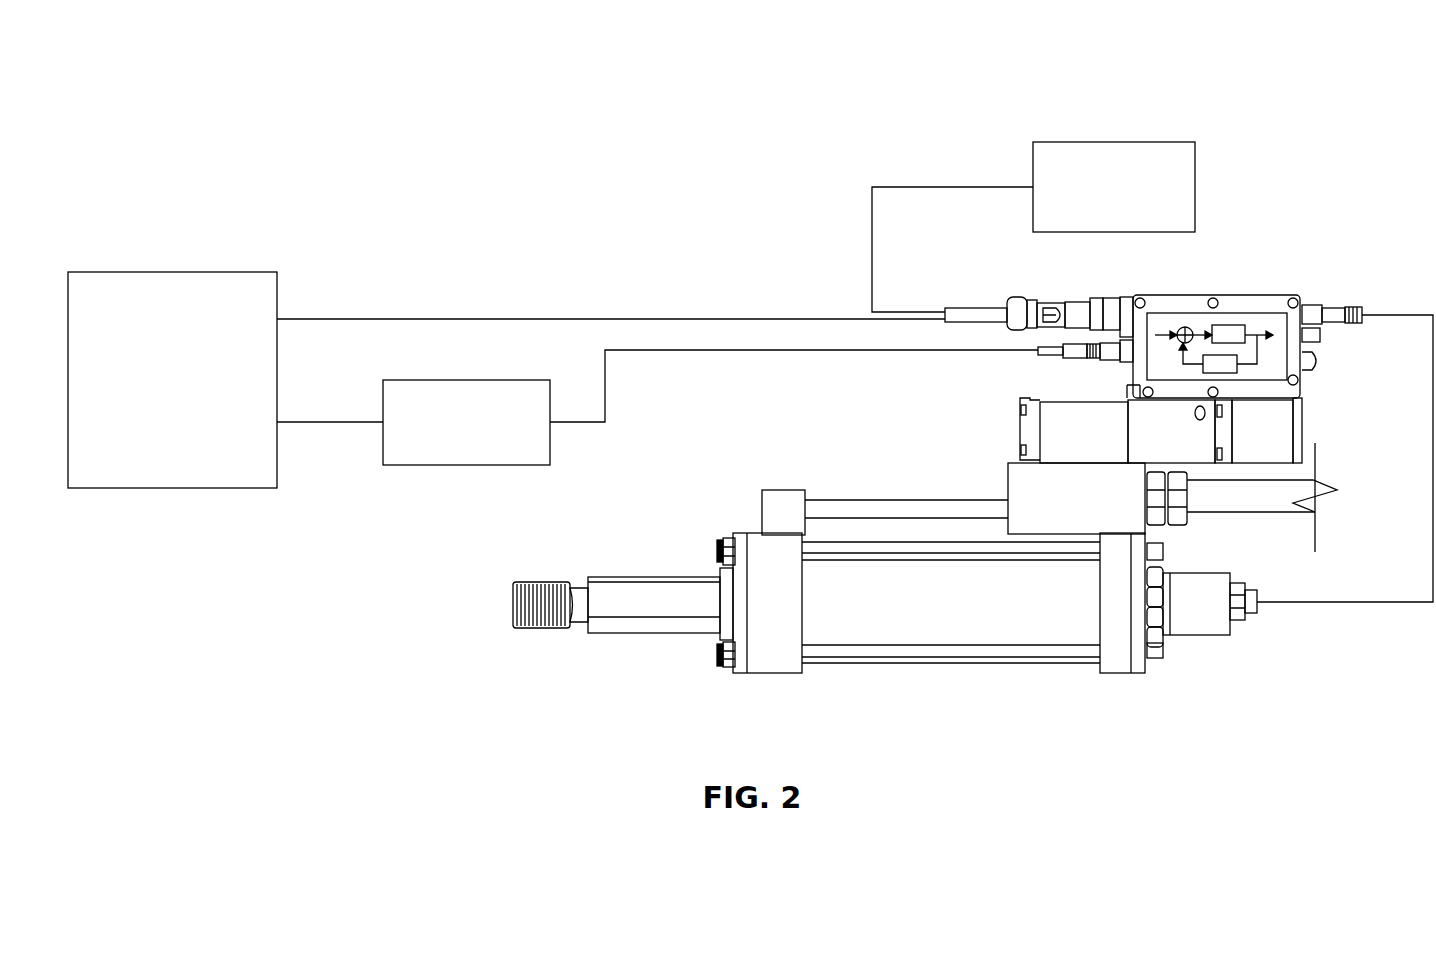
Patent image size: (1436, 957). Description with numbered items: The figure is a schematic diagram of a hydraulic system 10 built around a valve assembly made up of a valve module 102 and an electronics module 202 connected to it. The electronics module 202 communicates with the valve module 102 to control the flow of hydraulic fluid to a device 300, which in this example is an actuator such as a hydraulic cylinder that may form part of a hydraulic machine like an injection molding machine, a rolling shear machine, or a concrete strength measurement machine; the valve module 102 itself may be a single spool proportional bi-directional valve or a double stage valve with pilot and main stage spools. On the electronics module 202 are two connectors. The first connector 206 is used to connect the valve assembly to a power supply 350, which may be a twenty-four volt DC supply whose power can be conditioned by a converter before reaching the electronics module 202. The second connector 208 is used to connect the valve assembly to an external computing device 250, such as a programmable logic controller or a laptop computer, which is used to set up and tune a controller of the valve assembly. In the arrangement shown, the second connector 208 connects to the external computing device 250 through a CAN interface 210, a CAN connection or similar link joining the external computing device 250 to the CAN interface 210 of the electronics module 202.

The hydraulic system 10 is at (213, 62).
The external computing device 250 is at (157, 271).
The CAN interface 210 is at (425, 467).
The power supply 350 is at (1123, 141).
The first connector 206 is at (1117, 307).
The second connector 208 is at (1113, 358).
The electronics module 202 is at (1232, 300).
The valve module 102 is at (1058, 423).
The device 300 is at (773, 673).